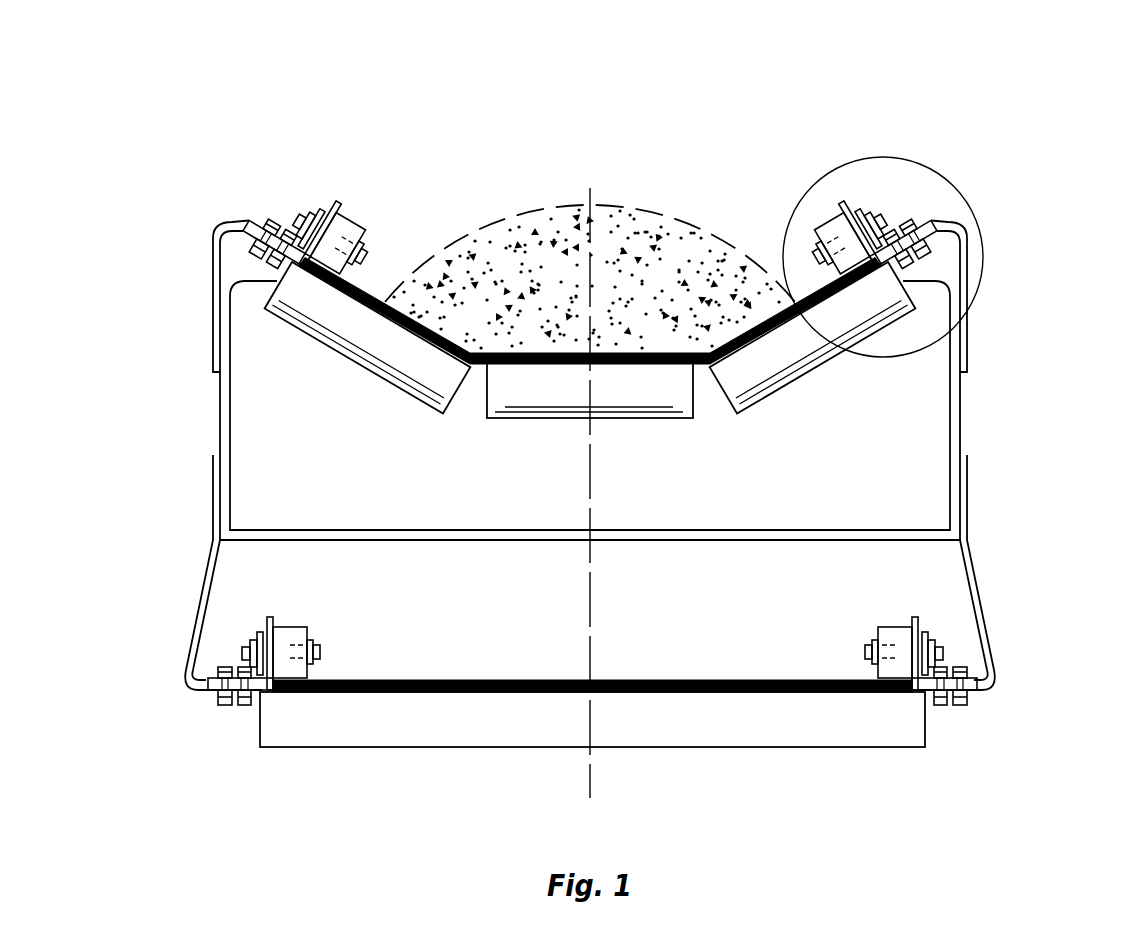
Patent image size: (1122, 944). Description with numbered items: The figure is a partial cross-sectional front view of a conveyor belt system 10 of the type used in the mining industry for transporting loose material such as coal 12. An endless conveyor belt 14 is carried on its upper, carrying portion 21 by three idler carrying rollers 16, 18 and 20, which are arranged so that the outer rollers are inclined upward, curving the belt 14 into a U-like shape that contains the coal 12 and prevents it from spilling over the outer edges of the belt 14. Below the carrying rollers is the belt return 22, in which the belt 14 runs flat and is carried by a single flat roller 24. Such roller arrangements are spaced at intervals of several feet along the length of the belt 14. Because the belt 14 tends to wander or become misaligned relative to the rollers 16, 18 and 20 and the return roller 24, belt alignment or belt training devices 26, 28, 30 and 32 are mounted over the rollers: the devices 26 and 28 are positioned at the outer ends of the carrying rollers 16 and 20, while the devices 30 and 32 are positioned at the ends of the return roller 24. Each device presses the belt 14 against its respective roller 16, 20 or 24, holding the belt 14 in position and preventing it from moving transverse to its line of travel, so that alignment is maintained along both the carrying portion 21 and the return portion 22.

The conveyor belt system 10 is at (743, 120).
The coal 12 is at (658, 223).
The conveyor belt 14 is at (380, 297).
The idler carrying roller 16 is at (348, 360).
The idler carrying roller 18 is at (565, 420).
The idler carrying roller 20 is at (803, 373).
The carrying portion 21 is at (990, 320).
The belt return 22 is at (962, 715).
The flat roller 24 is at (705, 748).
The belt alignment device 26 is at (340, 192).
The belt alignment device 28 is at (978, 226).
The belt alignment device 30 is at (220, 708).
The belt alignment device 32 is at (960, 639).